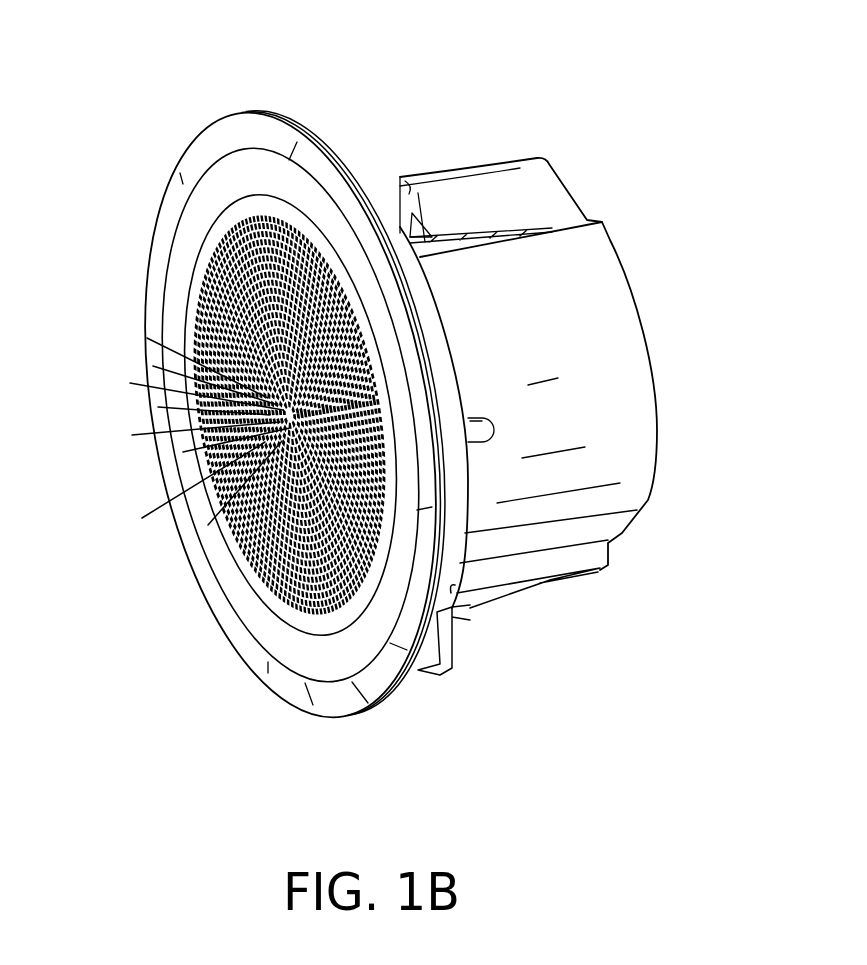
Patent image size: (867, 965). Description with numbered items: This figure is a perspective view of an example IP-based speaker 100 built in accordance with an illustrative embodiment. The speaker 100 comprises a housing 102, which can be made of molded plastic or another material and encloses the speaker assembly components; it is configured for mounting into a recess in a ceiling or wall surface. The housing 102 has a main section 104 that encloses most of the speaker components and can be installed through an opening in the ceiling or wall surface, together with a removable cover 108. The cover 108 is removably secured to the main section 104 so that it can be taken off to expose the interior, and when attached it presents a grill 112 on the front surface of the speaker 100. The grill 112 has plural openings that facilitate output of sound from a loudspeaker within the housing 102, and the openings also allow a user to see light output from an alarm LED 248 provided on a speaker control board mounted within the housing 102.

The IP-based speaker 100 is at (222, 686).
The housing 102 is at (450, 172).
The main section 104 is at (585, 300).
The removable cover 108 is at (230, 137).
The grill 112 is at (237, 293).
The alarm LED 248 is at (160, 500).